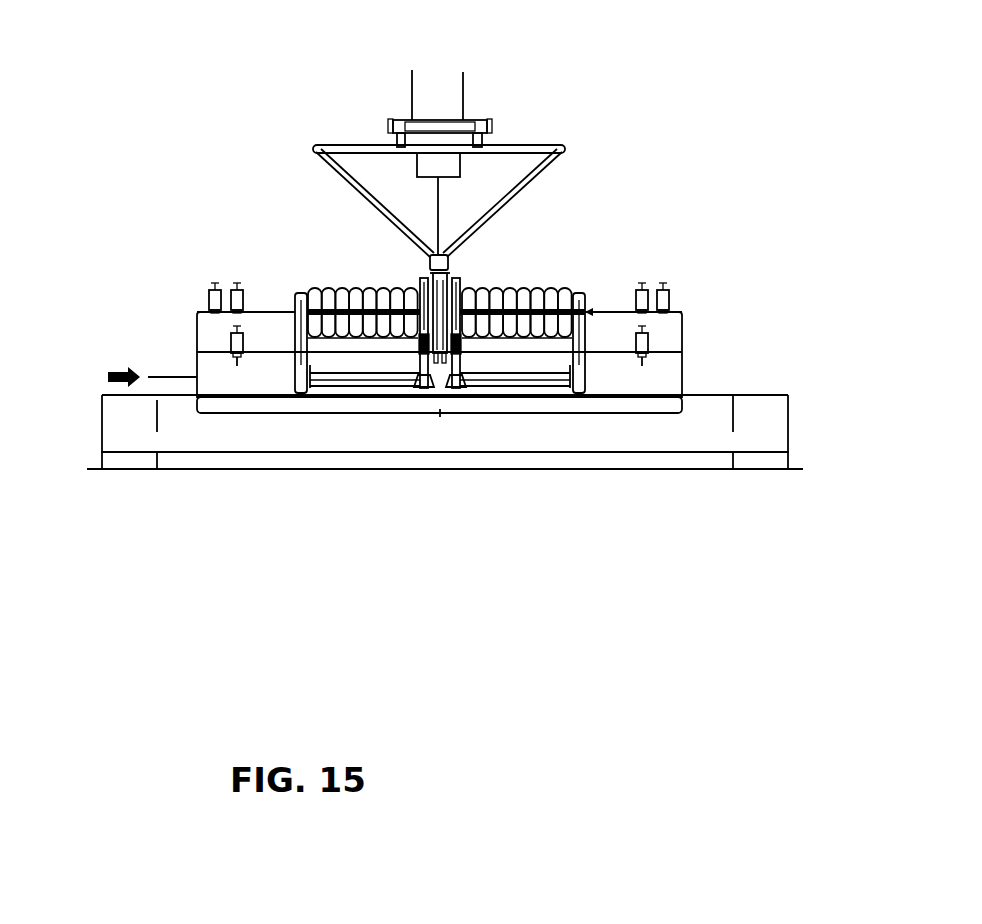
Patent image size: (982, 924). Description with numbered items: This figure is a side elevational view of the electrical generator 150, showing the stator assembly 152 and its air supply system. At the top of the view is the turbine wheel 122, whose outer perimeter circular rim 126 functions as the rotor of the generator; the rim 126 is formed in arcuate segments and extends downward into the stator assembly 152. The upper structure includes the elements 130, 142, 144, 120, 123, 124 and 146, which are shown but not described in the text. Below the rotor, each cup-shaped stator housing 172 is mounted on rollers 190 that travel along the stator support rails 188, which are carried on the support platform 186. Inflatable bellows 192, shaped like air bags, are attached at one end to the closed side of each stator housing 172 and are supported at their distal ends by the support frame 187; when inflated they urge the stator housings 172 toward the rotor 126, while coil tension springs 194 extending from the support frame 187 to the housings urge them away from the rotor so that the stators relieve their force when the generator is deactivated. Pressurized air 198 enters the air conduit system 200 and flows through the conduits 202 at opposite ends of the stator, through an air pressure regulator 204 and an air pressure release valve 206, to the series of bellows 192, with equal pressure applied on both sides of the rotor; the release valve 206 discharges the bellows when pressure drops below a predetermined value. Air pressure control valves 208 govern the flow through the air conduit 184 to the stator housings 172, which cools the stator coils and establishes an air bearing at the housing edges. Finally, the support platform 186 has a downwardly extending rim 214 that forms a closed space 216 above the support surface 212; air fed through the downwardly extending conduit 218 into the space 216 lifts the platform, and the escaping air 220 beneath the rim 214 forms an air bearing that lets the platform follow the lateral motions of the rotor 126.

The turbine wheel 122 is at (454, 90).
The support rods 130 is at (418, 88).
The mounting plate 142 is at (468, 122).
The spacers 144 is at (485, 137).
The frame assembly 120 is at (418, 254).
The cross bar 123 is at (540, 172).
The frame arms 124 is at (517, 190).
The actuator housing 146 is at (452, 168).
The outer perimeter circular rim 126 is at (457, 265).
The electrical generator 150 is at (664, 232).
The stator assembly 152 is at (298, 265).
The stator housing 172 is at (418, 285).
The inflatable bellows 192 is at (440, 296).
The coil tension springs 194 is at (375, 333).
The support frame 187 is at (294, 322).
The rollers 190 is at (416, 377).
The stator support rails 188 is at (562, 380).
The air conduit system 200 is at (194, 358).
The conduits 202 is at (289, 308).
The air pressure regulator 204 is at (236, 288).
The air pressure release valve 206 is at (210, 297).
The air pressure control valves 208 is at (238, 348).
The air conduit 184 is at (242, 345).
The air 198 is at (110, 364).
The support platform 186 is at (712, 405).
The support surface 212 is at (524, 468).
The closed space 216 is at (445, 462).
The downwardly extending rim 214 is at (127, 462).
The escaping air 220 is at (92, 460).
The downwardly extending conduit 218 is at (441, 419).